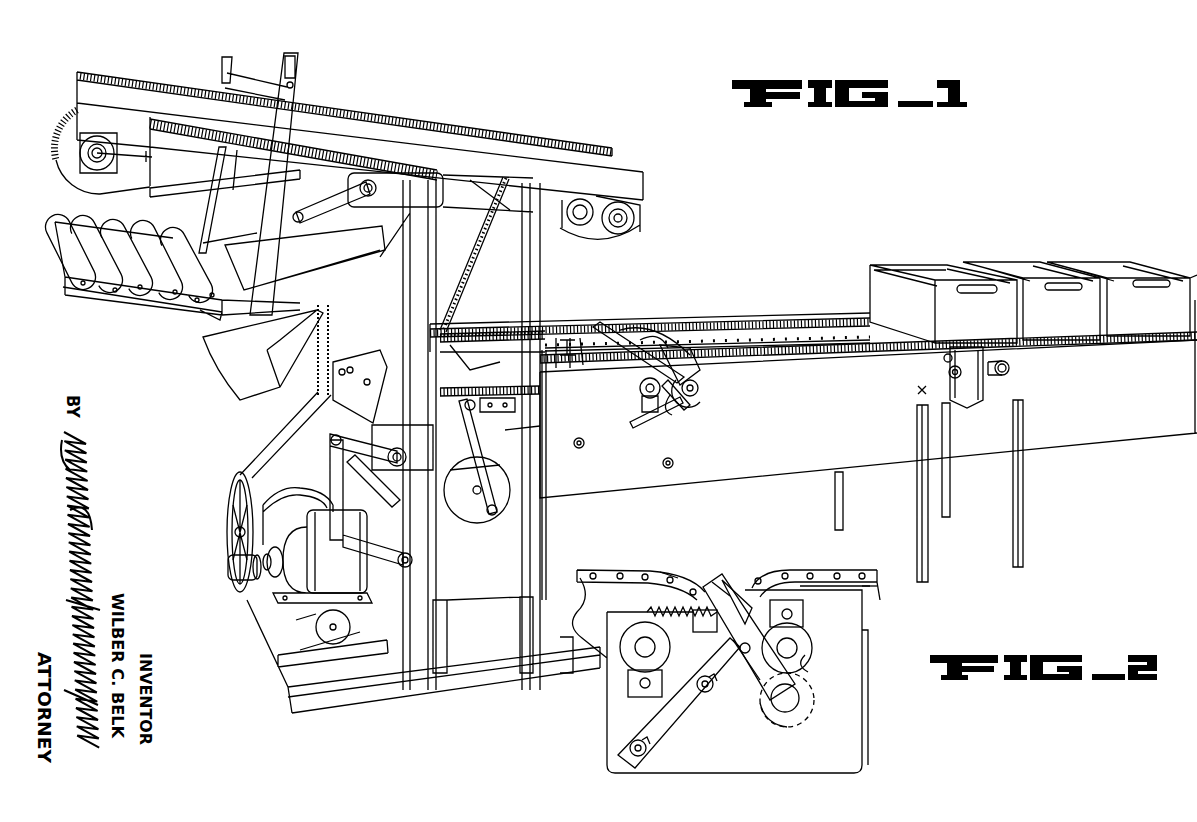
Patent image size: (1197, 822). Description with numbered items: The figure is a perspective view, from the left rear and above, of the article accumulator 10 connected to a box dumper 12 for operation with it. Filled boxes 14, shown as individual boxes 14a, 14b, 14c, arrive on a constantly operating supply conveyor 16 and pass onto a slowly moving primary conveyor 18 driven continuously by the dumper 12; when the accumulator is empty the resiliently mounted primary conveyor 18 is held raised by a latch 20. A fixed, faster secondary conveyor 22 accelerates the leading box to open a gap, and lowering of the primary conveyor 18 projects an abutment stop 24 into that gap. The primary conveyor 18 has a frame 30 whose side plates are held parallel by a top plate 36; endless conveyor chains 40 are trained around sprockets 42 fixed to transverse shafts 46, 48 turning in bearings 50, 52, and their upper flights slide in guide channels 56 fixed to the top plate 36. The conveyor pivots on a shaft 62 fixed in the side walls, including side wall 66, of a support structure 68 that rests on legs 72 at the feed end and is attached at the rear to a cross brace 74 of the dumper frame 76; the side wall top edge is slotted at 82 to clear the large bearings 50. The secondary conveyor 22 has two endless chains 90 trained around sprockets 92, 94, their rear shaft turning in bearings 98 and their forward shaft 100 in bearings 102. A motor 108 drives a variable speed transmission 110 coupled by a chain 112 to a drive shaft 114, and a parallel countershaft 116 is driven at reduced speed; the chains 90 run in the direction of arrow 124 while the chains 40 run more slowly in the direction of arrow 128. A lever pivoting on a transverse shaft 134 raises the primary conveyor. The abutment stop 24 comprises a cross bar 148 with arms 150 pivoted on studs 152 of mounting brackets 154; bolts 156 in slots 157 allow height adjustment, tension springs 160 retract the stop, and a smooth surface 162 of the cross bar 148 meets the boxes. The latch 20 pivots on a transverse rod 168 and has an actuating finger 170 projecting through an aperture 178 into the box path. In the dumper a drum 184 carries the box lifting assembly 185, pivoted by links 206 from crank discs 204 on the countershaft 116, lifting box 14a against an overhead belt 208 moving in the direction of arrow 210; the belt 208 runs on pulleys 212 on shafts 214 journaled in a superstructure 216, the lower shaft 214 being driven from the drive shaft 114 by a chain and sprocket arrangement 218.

In FIG. 1, the article accumulator 10 is at (781, 184).
In FIG. 1, the box dumper 12 is at (469, 93).
In FIG. 1, the filled boxes 14 is at (1103, 258).
In FIG. 1, the box 14a is at (988, 330).
In FIG. 1, the second case 14b is at (1073, 324).
In FIG. 1, the third case 14c is at (1154, 322).
In FIG. 1, the supply conveyor 16 is at (945, 410).
In FIG. 1, the primary conveyor 18 is at (1005, 410).
In FIG. 2, the primary conveyor 18 is at (808, 572).
In FIG. 1, the latch 20 is at (582, 335).
In FIG. 1, the secondary conveyor 22 is at (558, 336).
In FIG. 2, the secondary conveyor 22 is at (645, 556).
In FIG. 1, the abutment stop 24 is at (620, 330).
In FIG. 2, the abutment stop 24 is at (727, 573).
In FIG. 1, the frame 30 is at (950, 403).
In FIG. 1, the top plate 36 is at (826, 342).
In FIG. 1, the endless conveyor chains 40 is at (790, 355).
In FIG. 2, the endless conveyor chains 40 is at (878, 583).
In FIG. 1, the sprockets 42 is at (652, 336).
In FIG. 2, the sprockets 42 is at (795, 590).
In FIG. 1, the transverse shaft 46 is at (697, 388).
In FIG. 2, the transverse shaft 46 is at (797, 642).
In FIG. 1, the transverse shaft 48 is at (948, 377).
In FIG. 1, the bearings 50 is at (699, 394).
In FIG. 2, the bearings 50 is at (818, 660).
In FIG. 1, the bearings 52 is at (947, 372).
In FIG. 1, the guide channels 56 is at (776, 362).
In FIG. 1, the shaft 62 is at (922, 390).
In FIG. 1, the side wall 66 is at (803, 428).
In FIG. 2, the side wall 66 is at (717, 761).
In FIG. 1, the support structure 68 is at (775, 468).
In FIG. 2, the support structure 68 is at (862, 746).
In FIG. 1, the legs 72 is at (917, 484).
In FIG. 1, the cross brace 74 is at (520, 468).
In FIG. 1, the frame 76 is at (540, 541).
In FIG. 1, the slot 82 is at (678, 402).
In FIG. 2, the slot 82 is at (813, 656).
In FIG. 1, the endless chains 90 is at (562, 350).
In FIG. 2, the endless chains 90 is at (651, 575).
In FIG. 1, the sprockets 92 is at (503, 372).
In FIG. 1, the sprockets 94 is at (672, 352).
In FIG. 2, the sprockets 94 is at (628, 604).
In FIG. 1, the bearings 98 is at (498, 413).
In FIG. 1, the shaft 100 is at (643, 401).
In FIG. 2, the shaft 100 is at (644, 657).
In FIG. 1, the bearings 102 is at (638, 391).
In FIG. 2, the bearings 102 is at (643, 651).
In FIG. 1, the motor 108 is at (357, 576).
In FIG. 1, the variable speed transmission 110 is at (272, 486).
In FIG. 1, the chain 112 is at (299, 434).
In FIG. 1, the drive shaft 114 is at (396, 437).
In FIG. 1, the countershaft 116 is at (448, 515).
In FIG. 1, the arrow 124 is at (470, 330).
In FIG. 2, the arrow 124 is at (585, 562).
In FIG. 1, the arrow 128 is at (822, 312).
In FIG. 2, the arrow 128 is at (825, 562).
In FIG. 1, the transverse shaft 134 is at (584, 446).
In FIG. 1, the cross bar 148 is at (628, 335).
In FIG. 2, the cross bar 148 is at (700, 588).
In FIG. 1, the arms 150 is at (701, 401).
In FIG. 2, the arms 150 is at (745, 628).
In FIG. 2, the studs 152 is at (708, 692).
In FIG. 1, the mounting brackets 154 is at (655, 416).
In FIG. 2, the mounting brackets 154 is at (675, 706).
In FIG. 2, the bolts 156 is at (649, 748).
In FIG. 2, the slots 157 is at (700, 684).
In FIG. 2, the tension springs 160 is at (678, 619).
In FIG. 2, the surface 162 is at (735, 580).
In FIG. 1, the transverse rod 168 is at (673, 466).
In FIG. 1, the actuating finger 170 is at (562, 347).
In FIG. 1, the aperture 178 is at (556, 333).
In FIG. 1, the drum 184 is at (363, 345).
In FIG. 1, the box lifting assembly 185 is at (442, 410).
In FIG. 1, the crank disc 204 is at (510, 482).
In FIG. 1, the links 206 is at (497, 516).
In FIG. 1, the overhead belt 208 is at (150, 178).
In FIG. 1, the arrow 210 is at (203, 200).
In FIG. 1, the pulleys 212 is at (106, 182).
In FIG. 1, the shafts 214 is at (95, 156).
In FIG. 1, the superstructure 216 is at (545, 129).
In FIG. 1, the chain and sprocket arrangement 218 is at (485, 257).